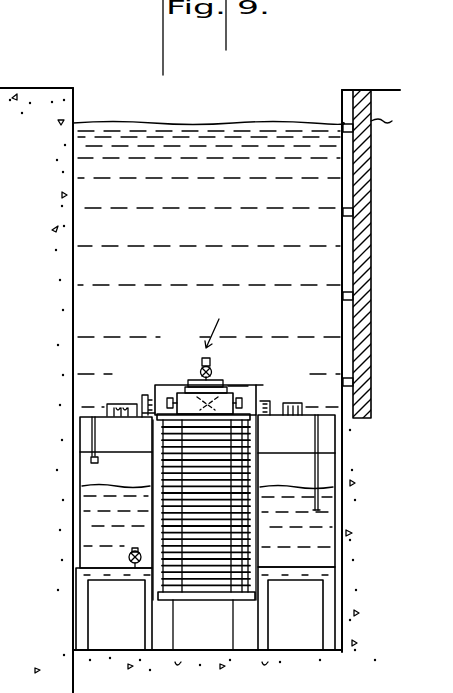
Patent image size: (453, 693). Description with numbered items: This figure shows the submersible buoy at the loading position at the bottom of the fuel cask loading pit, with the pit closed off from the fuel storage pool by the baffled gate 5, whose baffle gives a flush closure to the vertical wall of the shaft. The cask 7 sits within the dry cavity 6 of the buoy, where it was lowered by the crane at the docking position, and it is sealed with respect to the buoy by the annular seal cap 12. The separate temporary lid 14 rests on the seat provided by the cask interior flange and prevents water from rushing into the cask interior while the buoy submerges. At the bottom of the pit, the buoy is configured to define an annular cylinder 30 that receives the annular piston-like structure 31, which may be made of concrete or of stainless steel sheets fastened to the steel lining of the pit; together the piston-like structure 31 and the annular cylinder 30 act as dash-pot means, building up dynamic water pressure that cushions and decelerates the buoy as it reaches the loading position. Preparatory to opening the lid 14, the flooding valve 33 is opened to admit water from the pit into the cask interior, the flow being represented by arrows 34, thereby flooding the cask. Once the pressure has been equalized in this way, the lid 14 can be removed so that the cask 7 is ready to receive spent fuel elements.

The baffled gate 5 is at (371, 348).
The dry cavity 6 is at (152, 388).
The cask 7 is at (165, 475).
The annular seal cap 12 is at (263, 384).
The temporary lid 14 is at (188, 382).
The annular cylinder 30 is at (76, 618).
The annular piston-like structure 31 is at (318, 607).
The flooding valve 33 is at (200, 370).
The arrows 34 is at (229, 385).